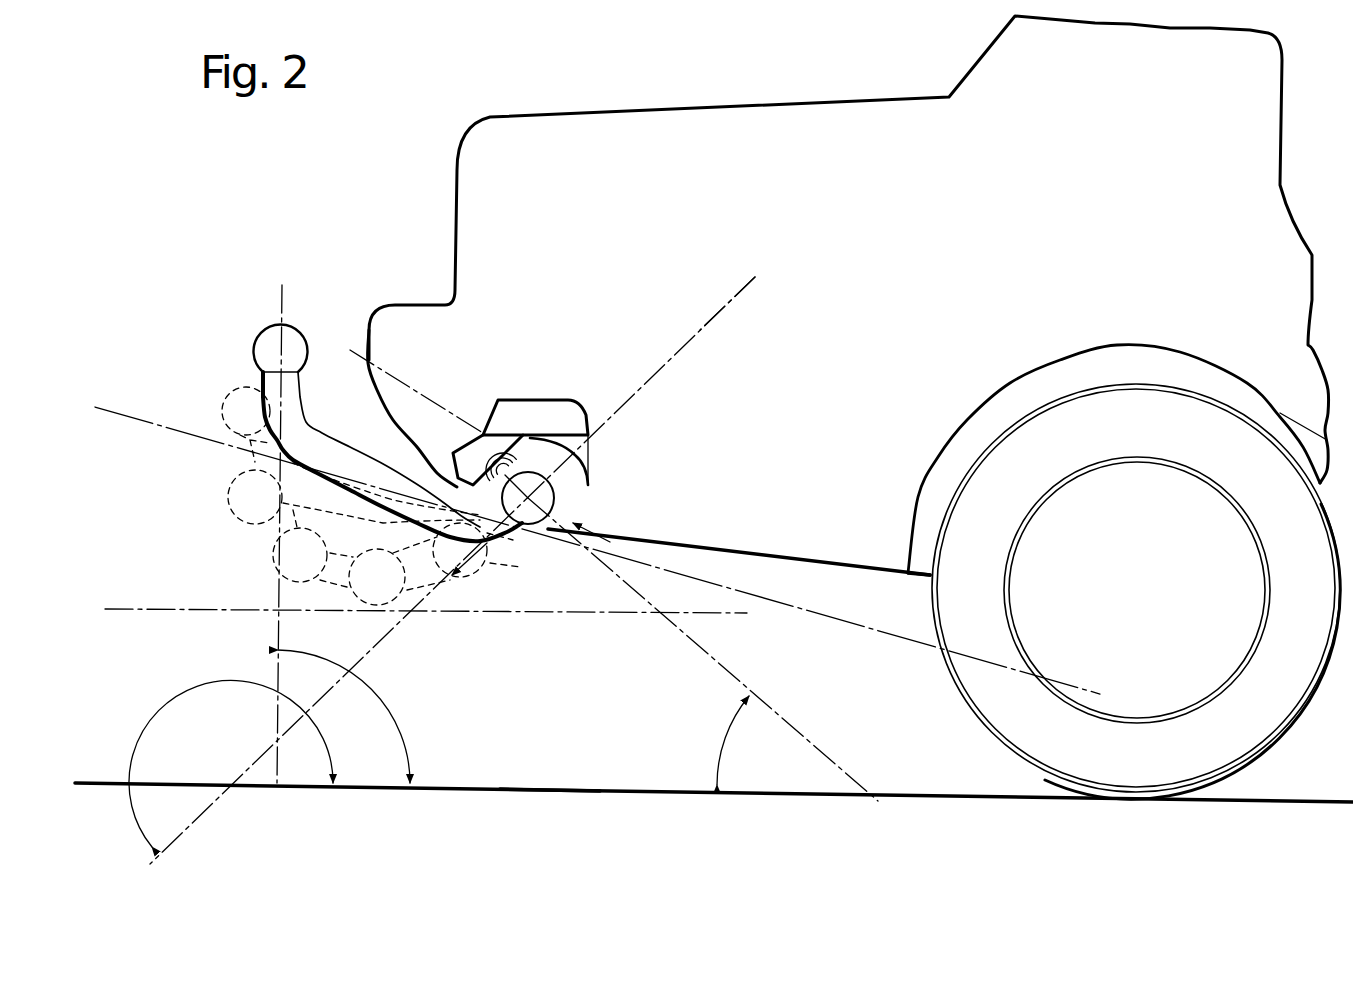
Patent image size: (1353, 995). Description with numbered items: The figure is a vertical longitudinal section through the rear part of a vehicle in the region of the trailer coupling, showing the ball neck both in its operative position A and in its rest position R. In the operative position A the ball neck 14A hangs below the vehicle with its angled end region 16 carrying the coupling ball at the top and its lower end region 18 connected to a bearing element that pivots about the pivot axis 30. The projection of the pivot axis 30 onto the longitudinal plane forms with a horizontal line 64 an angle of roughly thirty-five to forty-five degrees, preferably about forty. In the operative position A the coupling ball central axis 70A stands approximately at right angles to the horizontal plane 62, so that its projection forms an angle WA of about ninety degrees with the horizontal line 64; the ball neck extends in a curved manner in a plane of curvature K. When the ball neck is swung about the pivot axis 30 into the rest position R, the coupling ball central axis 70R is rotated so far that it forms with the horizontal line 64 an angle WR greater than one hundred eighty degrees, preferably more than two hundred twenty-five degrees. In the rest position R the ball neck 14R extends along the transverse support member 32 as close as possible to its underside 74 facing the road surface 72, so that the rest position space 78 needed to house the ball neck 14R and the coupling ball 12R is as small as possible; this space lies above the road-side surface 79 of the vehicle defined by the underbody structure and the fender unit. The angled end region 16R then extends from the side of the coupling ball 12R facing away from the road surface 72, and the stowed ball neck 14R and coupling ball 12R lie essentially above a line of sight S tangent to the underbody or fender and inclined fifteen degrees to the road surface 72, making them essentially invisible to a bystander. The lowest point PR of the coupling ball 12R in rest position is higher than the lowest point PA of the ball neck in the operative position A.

The angled end region 16 is at (265, 402).
The ball neck in operative position 14A is at (338, 457).
The lower end region 18 is at (430, 503).
The transverse support member 32 is at (473, 430).
The underside 74 is at (527, 438).
The ball neck in rest position 14R is at (598, 440).
The angled end region in rest position 16R is at (590, 480).
The coupling ball in rest position 12R is at (543, 530).
The rest position space 78 is at (608, 537).
The surface of the vehicle on the road side 79 is at (793, 560).
The horizontal plane 62 is at (733, 617).
The horizontal line 64 is at (800, 794).
The road surface 72 is at (545, 788).
The pivot axis 30 is at (822, 750).
The coupling ball central axis in operative position 70A is at (282, 305).
The coupling ball central axis in rest position 70R is at (257, 760).
The plane of curvature K is at (760, 282).
The line of sight S is at (125, 408).
The operative position A is at (266, 330).
The rest position R is at (560, 508).
The angle WR is at (170, 700).
The angle WA is at (402, 733).
The lowest point in operative position PA is at (483, 543).
The lowest point in rest position PR is at (533, 533).